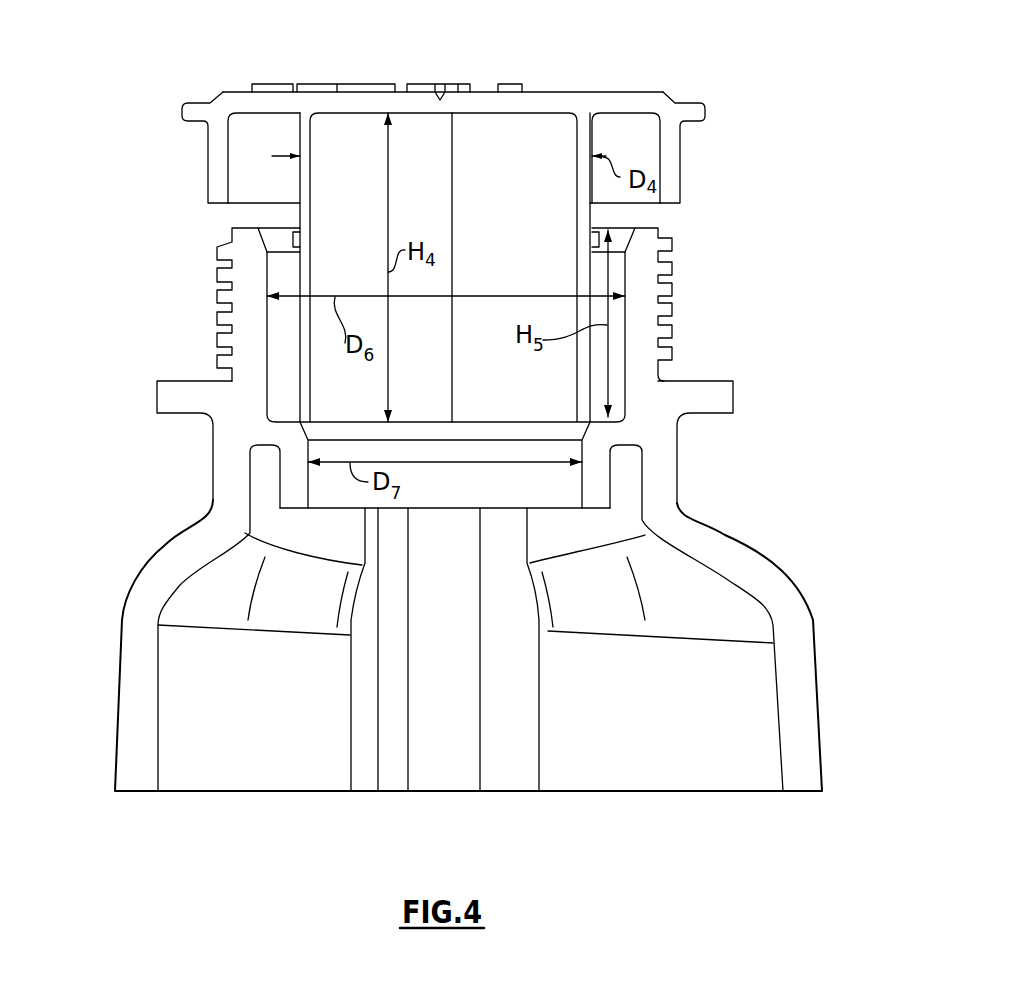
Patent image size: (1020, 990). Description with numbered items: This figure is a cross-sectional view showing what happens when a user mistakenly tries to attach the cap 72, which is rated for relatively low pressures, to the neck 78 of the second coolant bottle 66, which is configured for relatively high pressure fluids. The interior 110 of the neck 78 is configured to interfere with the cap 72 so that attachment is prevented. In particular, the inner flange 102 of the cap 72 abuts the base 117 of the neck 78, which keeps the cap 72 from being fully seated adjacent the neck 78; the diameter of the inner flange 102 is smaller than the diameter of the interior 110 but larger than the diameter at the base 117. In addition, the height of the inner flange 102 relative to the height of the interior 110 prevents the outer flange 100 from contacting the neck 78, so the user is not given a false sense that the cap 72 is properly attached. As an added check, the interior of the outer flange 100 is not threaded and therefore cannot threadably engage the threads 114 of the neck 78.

The second coolant bottle 66 is at (435, 509).
The cap 72 is at (491, 247).
The neck 78 is at (478, 368).
The outer flange 100 is at (673, 177).
The inner flange 102 is at (312, 185).
The interior 110 is at (297, 331).
The threads 114 is at (670, 262).
The base 117 is at (286, 432).